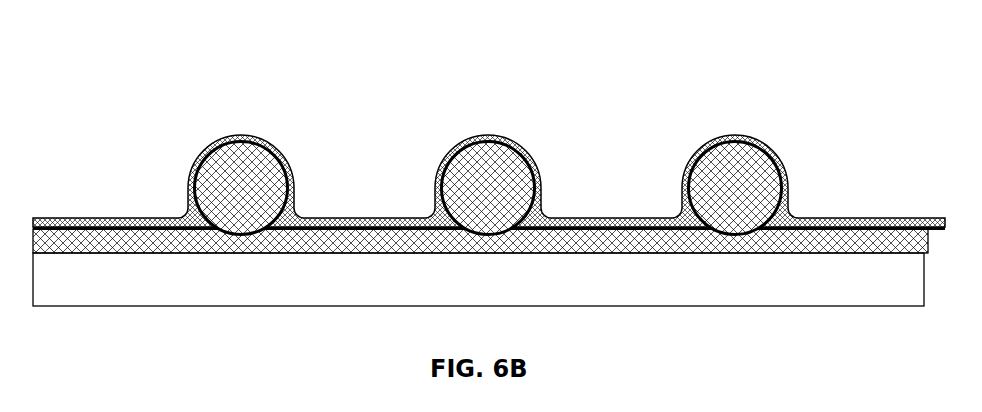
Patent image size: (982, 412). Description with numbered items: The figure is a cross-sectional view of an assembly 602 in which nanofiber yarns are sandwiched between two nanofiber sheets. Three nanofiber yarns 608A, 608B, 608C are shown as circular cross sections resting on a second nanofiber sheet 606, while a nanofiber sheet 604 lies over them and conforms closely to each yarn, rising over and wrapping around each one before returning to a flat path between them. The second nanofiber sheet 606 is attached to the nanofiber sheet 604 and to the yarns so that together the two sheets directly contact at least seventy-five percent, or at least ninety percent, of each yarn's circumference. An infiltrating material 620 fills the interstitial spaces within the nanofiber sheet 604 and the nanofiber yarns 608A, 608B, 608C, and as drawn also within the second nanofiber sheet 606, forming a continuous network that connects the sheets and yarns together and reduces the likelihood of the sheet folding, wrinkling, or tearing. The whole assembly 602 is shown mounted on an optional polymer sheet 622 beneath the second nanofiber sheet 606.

The assembly 602 is at (179, 109).
The nanofiber sheet 604 is at (813, 218).
The second nanofiber sheet 606 is at (813, 253).
The nanofiber yarn 608A is at (252, 181).
The nanofiber yarn 608B is at (497, 165).
The nanofiber yarn 608C is at (738, 168).
The infiltrating material 620 is at (233, 198).
The polymer sheet 622 is at (501, 300).